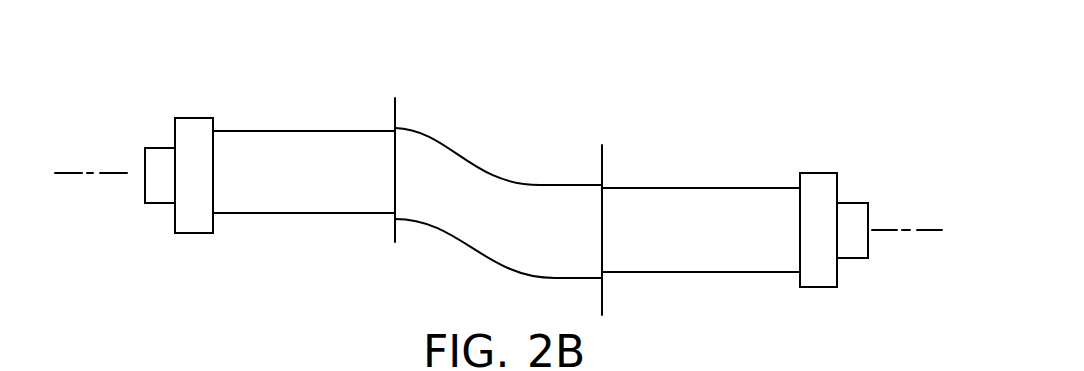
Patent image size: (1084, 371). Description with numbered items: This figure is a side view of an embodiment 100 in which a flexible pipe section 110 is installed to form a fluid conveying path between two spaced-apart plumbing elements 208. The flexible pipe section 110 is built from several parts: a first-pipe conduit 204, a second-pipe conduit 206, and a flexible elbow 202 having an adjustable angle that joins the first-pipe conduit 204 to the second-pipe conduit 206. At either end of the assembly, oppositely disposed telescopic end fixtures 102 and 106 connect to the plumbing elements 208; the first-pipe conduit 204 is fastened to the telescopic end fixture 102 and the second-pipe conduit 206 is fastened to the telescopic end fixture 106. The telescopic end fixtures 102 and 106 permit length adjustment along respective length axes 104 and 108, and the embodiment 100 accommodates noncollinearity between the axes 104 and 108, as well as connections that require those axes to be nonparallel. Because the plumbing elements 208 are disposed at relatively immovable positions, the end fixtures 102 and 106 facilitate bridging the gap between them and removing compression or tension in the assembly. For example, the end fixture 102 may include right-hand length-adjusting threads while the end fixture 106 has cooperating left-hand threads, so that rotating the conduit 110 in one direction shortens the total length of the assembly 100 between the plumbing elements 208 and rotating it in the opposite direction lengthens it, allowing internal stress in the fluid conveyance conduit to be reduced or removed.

The embodiment 100 is at (729, 98).
The telescopic end fixture 102 is at (197, 220).
The length axis 104 is at (68, 173).
The telescopic end fixture 106 is at (817, 275).
The length axis 108 is at (927, 232).
The flexible pipe section 110 is at (551, 128).
The elbow 202 is at (488, 185).
The first-pipe conduit 204 is at (297, 147).
The second-pipe conduit 206 is at (711, 216).
The plumbing elements 208 is at (158, 145).